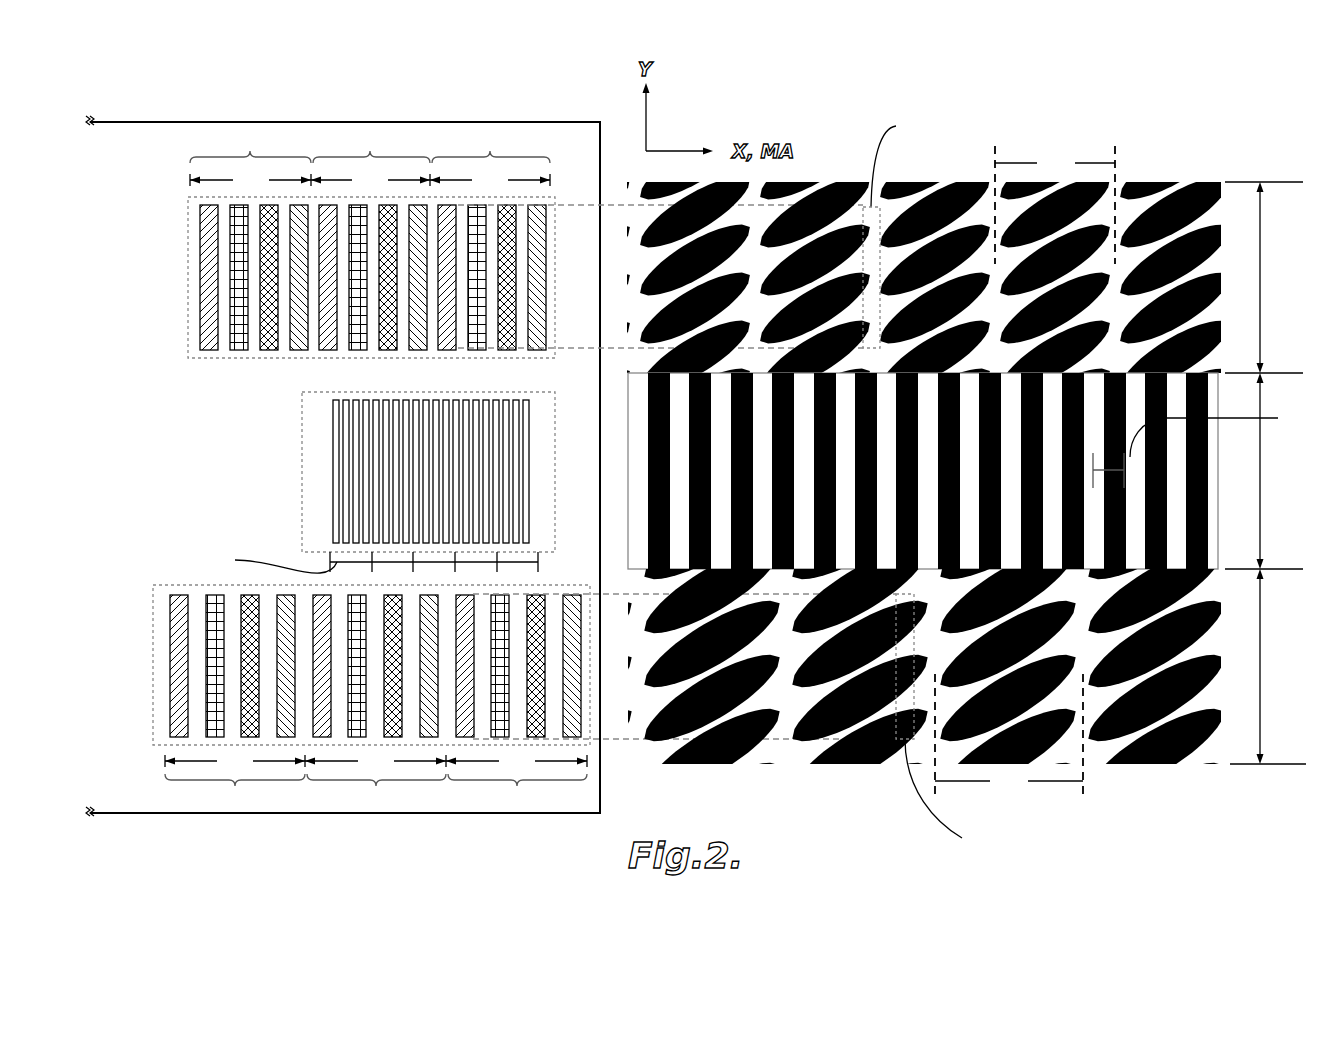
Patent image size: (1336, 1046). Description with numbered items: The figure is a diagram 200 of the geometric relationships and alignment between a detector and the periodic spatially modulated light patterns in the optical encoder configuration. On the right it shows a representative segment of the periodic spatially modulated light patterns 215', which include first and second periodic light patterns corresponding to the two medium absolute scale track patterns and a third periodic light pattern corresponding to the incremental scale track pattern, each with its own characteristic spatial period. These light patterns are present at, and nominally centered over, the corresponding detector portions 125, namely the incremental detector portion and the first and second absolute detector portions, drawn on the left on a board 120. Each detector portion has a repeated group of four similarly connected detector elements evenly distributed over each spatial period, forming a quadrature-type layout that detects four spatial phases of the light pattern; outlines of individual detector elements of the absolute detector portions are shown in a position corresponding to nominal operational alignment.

The detector board 120 is at (525, 120).
The detector portions 125 is at (327, 98).
The diagram 200 is at (1165, 72).
The periodic spatially modulated light patterns 215' is at (928, 259).